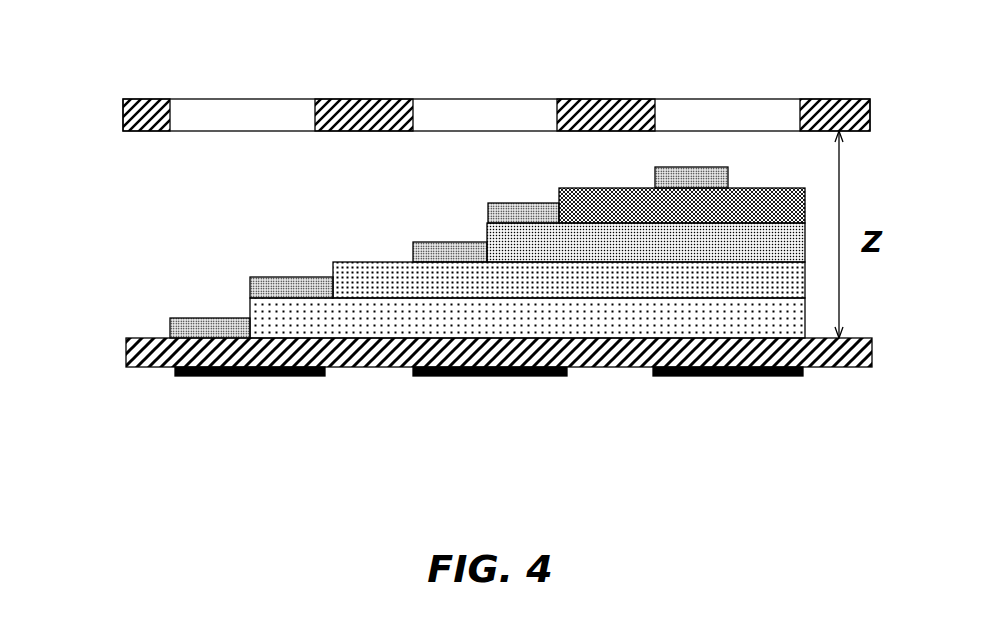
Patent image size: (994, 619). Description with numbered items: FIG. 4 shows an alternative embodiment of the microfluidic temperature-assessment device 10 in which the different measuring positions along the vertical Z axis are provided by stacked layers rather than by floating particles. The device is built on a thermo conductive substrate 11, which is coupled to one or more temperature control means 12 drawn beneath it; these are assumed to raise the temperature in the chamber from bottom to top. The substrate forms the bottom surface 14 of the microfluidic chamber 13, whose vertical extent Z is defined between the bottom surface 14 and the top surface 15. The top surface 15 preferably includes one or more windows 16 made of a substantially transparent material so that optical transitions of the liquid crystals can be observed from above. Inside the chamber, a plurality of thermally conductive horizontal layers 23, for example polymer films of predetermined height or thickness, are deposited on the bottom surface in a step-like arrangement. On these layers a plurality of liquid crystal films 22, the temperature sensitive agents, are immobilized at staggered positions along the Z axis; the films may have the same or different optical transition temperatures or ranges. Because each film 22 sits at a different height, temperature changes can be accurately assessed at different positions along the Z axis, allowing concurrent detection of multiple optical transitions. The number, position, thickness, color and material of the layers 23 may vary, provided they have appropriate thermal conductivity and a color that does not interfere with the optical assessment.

The display device 10 is at (493, 323).
The thermo conductive substrate 11 is at (863, 353).
The temperature control means 12 is at (252, 375).
The microfluidic chamber 13 is at (190, 230).
The bottom surface 14 is at (162, 338).
The top surface 15 is at (460, 105).
The windows 16 is at (243, 115).
The liquid crystal films 22 is at (437, 242).
The thermally conductive layers 23 is at (377, 262).